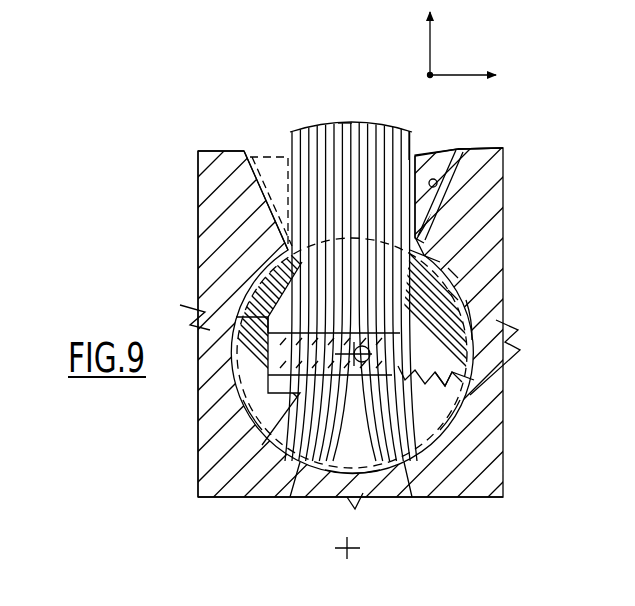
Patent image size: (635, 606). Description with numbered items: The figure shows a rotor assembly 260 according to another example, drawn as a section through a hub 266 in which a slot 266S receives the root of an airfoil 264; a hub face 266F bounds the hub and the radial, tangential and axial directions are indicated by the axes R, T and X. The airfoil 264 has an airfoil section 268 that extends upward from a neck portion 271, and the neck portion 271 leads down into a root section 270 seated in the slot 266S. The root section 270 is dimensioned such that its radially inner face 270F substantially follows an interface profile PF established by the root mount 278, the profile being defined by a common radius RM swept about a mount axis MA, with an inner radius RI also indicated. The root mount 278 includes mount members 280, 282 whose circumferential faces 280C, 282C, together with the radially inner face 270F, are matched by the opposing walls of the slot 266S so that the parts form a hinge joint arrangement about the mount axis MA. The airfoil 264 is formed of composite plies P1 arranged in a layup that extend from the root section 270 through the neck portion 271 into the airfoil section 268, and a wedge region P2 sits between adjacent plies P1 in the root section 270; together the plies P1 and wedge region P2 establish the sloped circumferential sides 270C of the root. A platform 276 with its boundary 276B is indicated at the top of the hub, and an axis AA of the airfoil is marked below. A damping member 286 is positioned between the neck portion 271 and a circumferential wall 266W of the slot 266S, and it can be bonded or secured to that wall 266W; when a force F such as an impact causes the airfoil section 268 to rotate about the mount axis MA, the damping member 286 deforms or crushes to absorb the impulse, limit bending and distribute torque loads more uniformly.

The rotor assembly 260 is at (240, 64).
The airfoil 264 is at (343, 112).
The hub 266 is at (193, 190).
The circumferential wall 266W is at (246, 150).
The hub face 266F is at (215, 230).
The slot 266S is at (432, 462).
The airfoil section 268 is at (350, 124).
The root section 270 is at (255, 497).
The sloped circumferential side 270C is at (250, 415).
The radially inner face 270F is at (330, 467).
The neck portion 271 is at (440, 194).
The platform 276 is at (412, 140).
The platform boundary 276B is at (290, 128).
The root mount 278 is at (474, 306).
The first mount member 280 is at (275, 270).
The circumferential face 280C is at (262, 322).
The second mount member 282 is at (478, 322).
The circumferential face 282C is at (488, 345).
The damping member 286 is at (432, 165).
The mount axis MA is at (360, 354).
The interface profile PF is at (490, 224).
The common radius RM is at (454, 272).
The inner radius RI is at (454, 294).
The force F is at (505, 392).
The plies P1 is at (296, 497).
The wedge region P2 is at (356, 470).
The airfoil axis AA is at (352, 556).
The radial direction R is at (440, 39).
The tangential direction T is at (470, 77).
The axial direction X is at (430, 75).